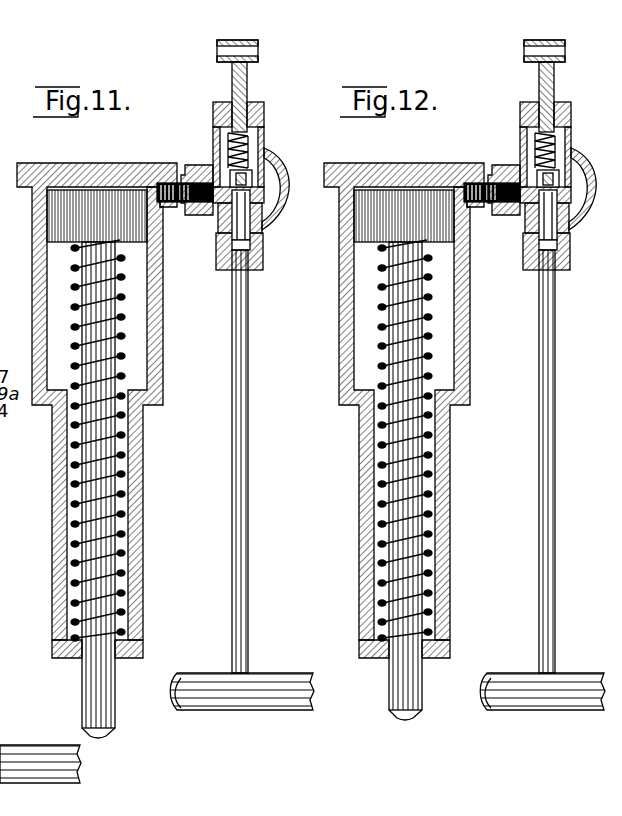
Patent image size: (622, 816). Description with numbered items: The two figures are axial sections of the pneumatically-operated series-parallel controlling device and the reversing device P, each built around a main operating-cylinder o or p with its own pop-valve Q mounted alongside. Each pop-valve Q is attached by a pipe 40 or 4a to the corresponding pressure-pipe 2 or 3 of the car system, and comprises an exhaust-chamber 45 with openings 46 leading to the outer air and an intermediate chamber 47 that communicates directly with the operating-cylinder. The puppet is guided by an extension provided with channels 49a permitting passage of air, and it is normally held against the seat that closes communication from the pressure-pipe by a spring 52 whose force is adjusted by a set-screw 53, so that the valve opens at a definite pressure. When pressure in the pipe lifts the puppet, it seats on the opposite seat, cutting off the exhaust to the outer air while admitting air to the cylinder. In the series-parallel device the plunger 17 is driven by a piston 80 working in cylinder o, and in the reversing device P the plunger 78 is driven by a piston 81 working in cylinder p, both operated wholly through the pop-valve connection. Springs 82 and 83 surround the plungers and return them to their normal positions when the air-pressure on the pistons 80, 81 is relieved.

In FIG. 11, the set-screw 53 is at (248, 82).
In FIG. 11, the openings 46 is at (213, 127).
In FIG. 12, the openings 46 is at (528, 114).
In FIG. 11, the exhaust-chamber 45 is at (213, 153).
In FIG. 12, the exhaust-chamber 45 is at (529, 171).
In FIG. 11, the spring 52 is at (253, 146).
In FIG. 11, the intermediate chamber 47 is at (278, 200).
In FIG. 12, the intermediate chamber 47 is at (589, 181).
In FIG. 11, the channels 49a is at (267, 237).
In FIG. 11, the piston 80 is at (157, 244).
In FIG. 11, the spring 82 is at (117, 437).
In FIG. 11, the pipe 40 is at (248, 528).
In FIG. 11, the plunger 17 is at (115, 678).
In FIG. 11, the pressure-pipe 2 is at (242, 681).
In FIG. 12, the piston 81 is at (430, 236).
In FIG. 12, the spring 83 is at (436, 440).
In FIG. 12, the pipe 4a is at (530, 461).
In FIG. 12, the plunger rod 78 is at (423, 481).
In FIG. 12, the pressure-pipe 3 is at (542, 681).
In FIG. 11, the pop-valve Q is at (293, 150).
In FIG. 12, the pop-valve Q is at (596, 236).
In FIG. 12, the reversing device P is at (404, 388).
In FIG. 11, the operating-cylinder o is at (98, 410).
In FIG. 12, the operating-cylinder p is at (482, 356).